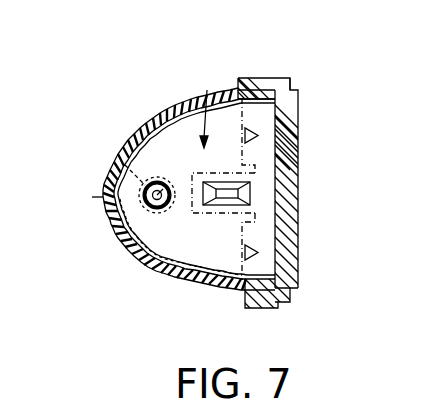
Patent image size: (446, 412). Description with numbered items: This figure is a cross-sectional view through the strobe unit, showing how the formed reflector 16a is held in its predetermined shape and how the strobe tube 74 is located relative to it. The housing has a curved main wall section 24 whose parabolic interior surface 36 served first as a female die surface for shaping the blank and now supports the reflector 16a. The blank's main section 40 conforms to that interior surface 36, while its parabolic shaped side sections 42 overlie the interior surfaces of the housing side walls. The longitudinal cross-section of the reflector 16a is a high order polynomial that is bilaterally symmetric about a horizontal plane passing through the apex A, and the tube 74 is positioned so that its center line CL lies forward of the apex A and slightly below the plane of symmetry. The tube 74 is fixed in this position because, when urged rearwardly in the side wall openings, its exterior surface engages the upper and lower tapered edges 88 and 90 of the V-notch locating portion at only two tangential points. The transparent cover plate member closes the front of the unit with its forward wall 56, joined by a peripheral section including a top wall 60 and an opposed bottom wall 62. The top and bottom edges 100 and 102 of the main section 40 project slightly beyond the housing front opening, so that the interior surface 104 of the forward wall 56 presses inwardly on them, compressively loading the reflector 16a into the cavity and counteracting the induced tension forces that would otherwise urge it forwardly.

The reflector 16a is at (197, 110).
The curved main wall section 24 is at (165, 263).
The parabolic interior surface 36 is at (233, 283).
The main section 40 is at (203, 108).
The side sections 42 is at (222, 248).
The forward wall 56 is at (298, 92).
The top wall 60 is at (267, 80).
The bottom wall 62 is at (278, 303).
The strobe tube 74 is at (163, 211).
The upper tapered edge 88 is at (138, 142).
The lower tapered edge 90 is at (133, 218).
The top edge 100 is at (249, 80).
The bottom edge 102 is at (245, 308).
The interior surface 104 is at (275, 125).
The apex A is at (90, 196).
The center line CL is at (163, 187).